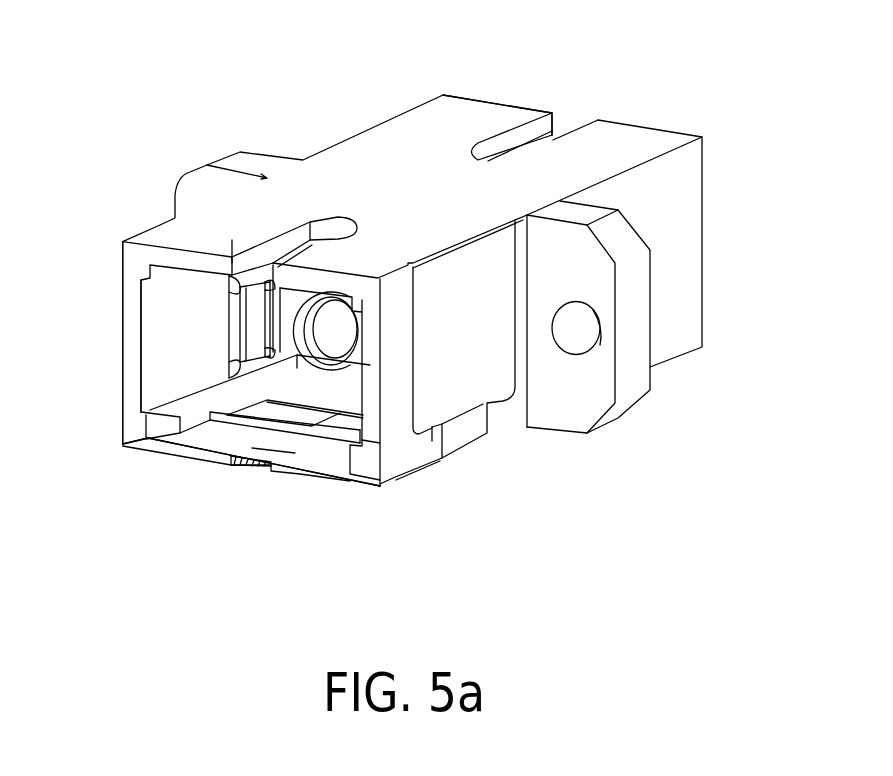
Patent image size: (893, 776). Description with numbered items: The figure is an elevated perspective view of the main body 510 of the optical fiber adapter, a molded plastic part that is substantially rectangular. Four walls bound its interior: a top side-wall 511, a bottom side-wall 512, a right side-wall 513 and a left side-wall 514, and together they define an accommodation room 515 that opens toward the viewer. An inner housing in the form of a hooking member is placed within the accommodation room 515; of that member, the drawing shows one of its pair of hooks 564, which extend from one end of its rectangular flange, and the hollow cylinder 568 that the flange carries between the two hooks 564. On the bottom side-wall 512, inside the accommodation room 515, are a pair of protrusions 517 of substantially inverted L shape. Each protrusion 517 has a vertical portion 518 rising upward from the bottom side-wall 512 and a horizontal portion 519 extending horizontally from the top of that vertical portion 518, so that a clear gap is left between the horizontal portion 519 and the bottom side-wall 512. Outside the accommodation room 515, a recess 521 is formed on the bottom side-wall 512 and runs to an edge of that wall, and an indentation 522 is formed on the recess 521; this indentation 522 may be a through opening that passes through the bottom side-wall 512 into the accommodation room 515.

The main body 510 is at (698, 86).
The top side-wall 511 is at (341, 163).
The bottom side-wall 512 is at (171, 450).
The right side-wall 513 is at (423, 465).
The left side-wall 514 is at (128, 408).
The accommodation room 515 is at (302, 398).
The protrusions 517 is at (124, 444).
The vertical portion 518 is at (138, 437).
The horizontal portion 519 is at (160, 444).
The recess 521 is at (242, 463).
The indentation 522 is at (260, 449).
The hooks 564 is at (258, 305).
The hollow cylinder 568 is at (355, 372).